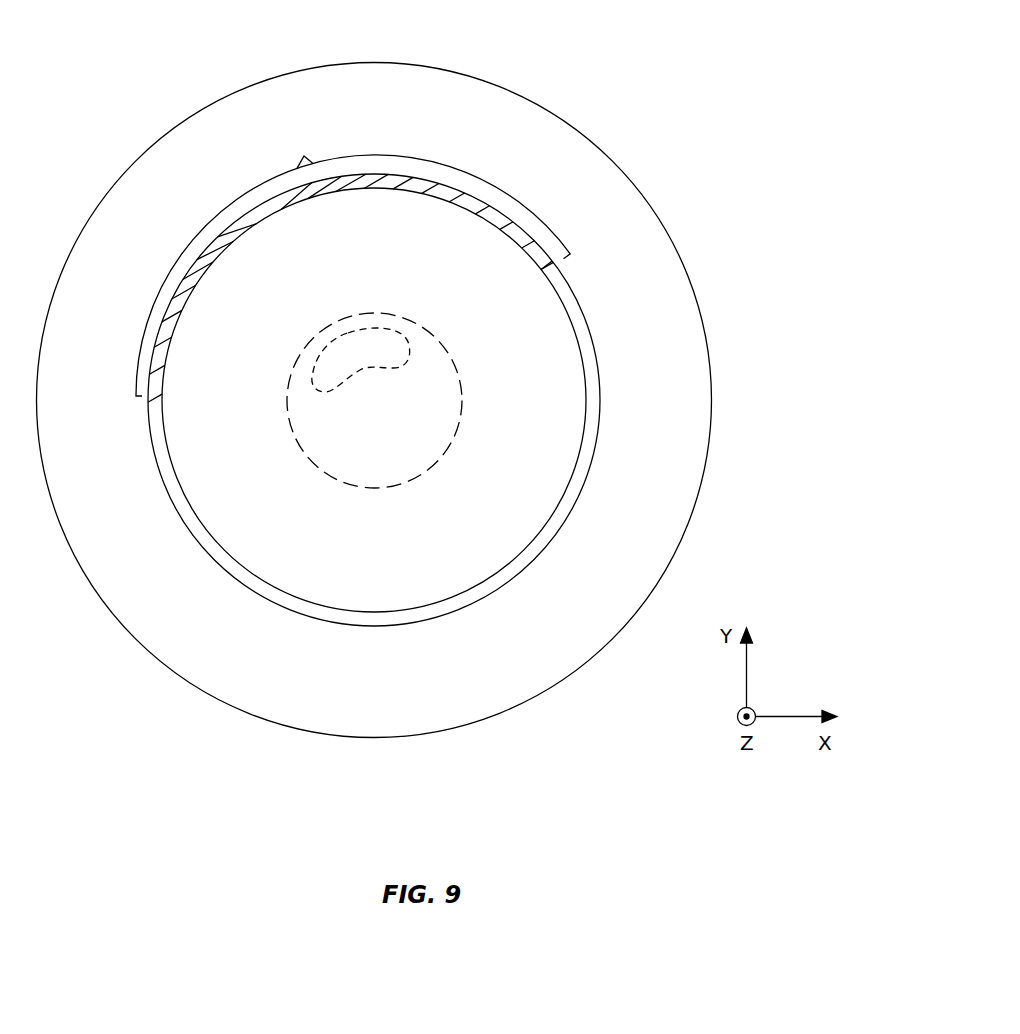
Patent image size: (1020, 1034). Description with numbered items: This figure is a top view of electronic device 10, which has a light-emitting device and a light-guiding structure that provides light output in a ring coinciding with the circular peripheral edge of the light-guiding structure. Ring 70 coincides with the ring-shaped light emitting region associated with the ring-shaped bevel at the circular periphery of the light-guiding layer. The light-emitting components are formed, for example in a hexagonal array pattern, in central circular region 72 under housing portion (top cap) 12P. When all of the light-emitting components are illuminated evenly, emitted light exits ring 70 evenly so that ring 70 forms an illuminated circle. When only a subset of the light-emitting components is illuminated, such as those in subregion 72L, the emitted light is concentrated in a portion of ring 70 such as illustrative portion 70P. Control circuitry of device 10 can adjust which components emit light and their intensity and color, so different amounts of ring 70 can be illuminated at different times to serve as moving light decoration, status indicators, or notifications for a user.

The electronic device 10 is at (611, 58).
The housing portion (top cap) 12P is at (690, 342).
The ring 70 is at (590, 470).
The portion of ring 70P is at (353, 265).
The central circular region 72 is at (403, 482).
The subregion 72L is at (380, 348).